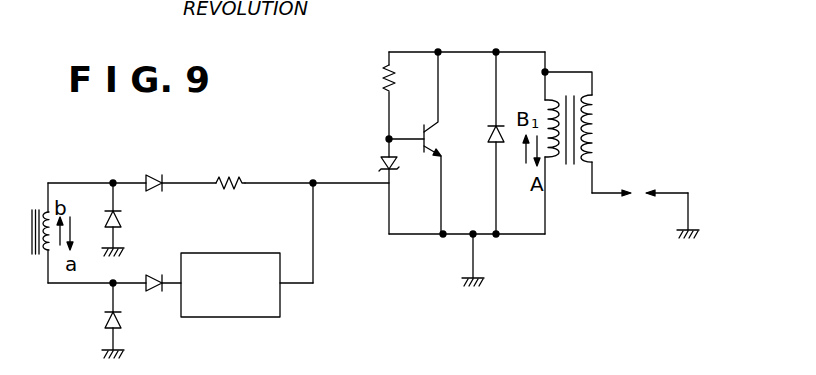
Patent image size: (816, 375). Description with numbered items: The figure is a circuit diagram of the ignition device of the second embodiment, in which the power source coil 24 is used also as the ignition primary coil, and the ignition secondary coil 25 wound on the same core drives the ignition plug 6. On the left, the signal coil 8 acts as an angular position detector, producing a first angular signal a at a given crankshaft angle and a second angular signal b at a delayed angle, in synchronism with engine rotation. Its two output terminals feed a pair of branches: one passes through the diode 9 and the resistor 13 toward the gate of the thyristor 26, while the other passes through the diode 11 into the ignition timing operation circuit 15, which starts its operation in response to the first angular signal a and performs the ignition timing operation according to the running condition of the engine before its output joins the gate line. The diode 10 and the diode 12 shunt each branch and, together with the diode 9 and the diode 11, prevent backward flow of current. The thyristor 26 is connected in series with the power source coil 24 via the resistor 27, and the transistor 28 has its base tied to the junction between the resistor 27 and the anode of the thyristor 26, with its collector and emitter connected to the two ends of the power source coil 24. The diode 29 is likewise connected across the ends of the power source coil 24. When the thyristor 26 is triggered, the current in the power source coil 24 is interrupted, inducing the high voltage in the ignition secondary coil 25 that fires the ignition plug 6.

The ignition plug 6 is at (645, 190).
The signal coil 8 is at (37, 262).
The diode 9 is at (153, 174).
The diode 10 is at (120, 222).
The diode 11 is at (156, 300).
The diode 12 is at (103, 320).
The resistor 13 is at (229, 176).
The ignition timing operation circuit 15 is at (233, 318).
The power source coil 24 is at (546, 108).
The ignition secondary coil 25 is at (598, 130).
The thyristor 26 is at (387, 190).
The resistor 27 is at (385, 84).
The transistor 28 is at (427, 157).
The diode 29 is at (490, 150).